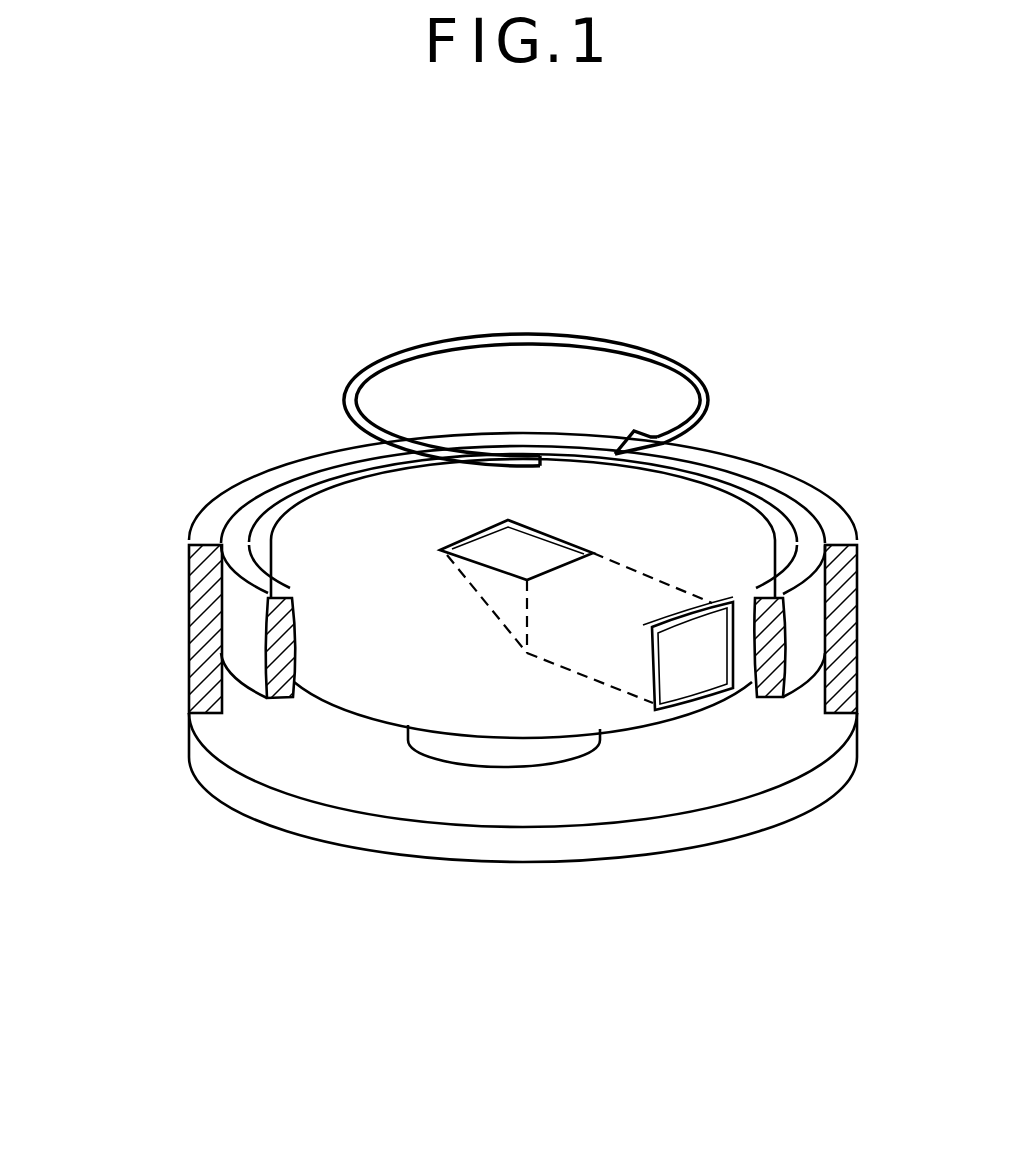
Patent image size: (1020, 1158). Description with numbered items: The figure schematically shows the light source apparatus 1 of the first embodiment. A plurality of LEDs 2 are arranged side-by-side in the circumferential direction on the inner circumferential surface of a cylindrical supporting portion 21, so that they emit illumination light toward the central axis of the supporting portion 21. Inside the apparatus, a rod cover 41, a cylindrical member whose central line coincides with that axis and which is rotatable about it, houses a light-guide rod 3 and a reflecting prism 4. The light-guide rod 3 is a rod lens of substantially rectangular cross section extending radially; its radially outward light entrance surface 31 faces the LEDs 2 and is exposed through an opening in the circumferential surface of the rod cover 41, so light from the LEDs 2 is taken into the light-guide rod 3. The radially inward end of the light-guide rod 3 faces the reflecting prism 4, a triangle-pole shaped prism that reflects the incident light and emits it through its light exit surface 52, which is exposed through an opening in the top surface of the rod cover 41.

The light source apparatus 1 is at (120, 258).
The LEDs 2 is at (807, 625).
The supporting portion 21 is at (513, 848).
The light-guide rod 3 is at (636, 600).
The light entrance surface 31 is at (688, 670).
The reflecting prism 4 is at (498, 593).
The rod cover 41 is at (320, 527).
The light exit surface 52 is at (487, 552).